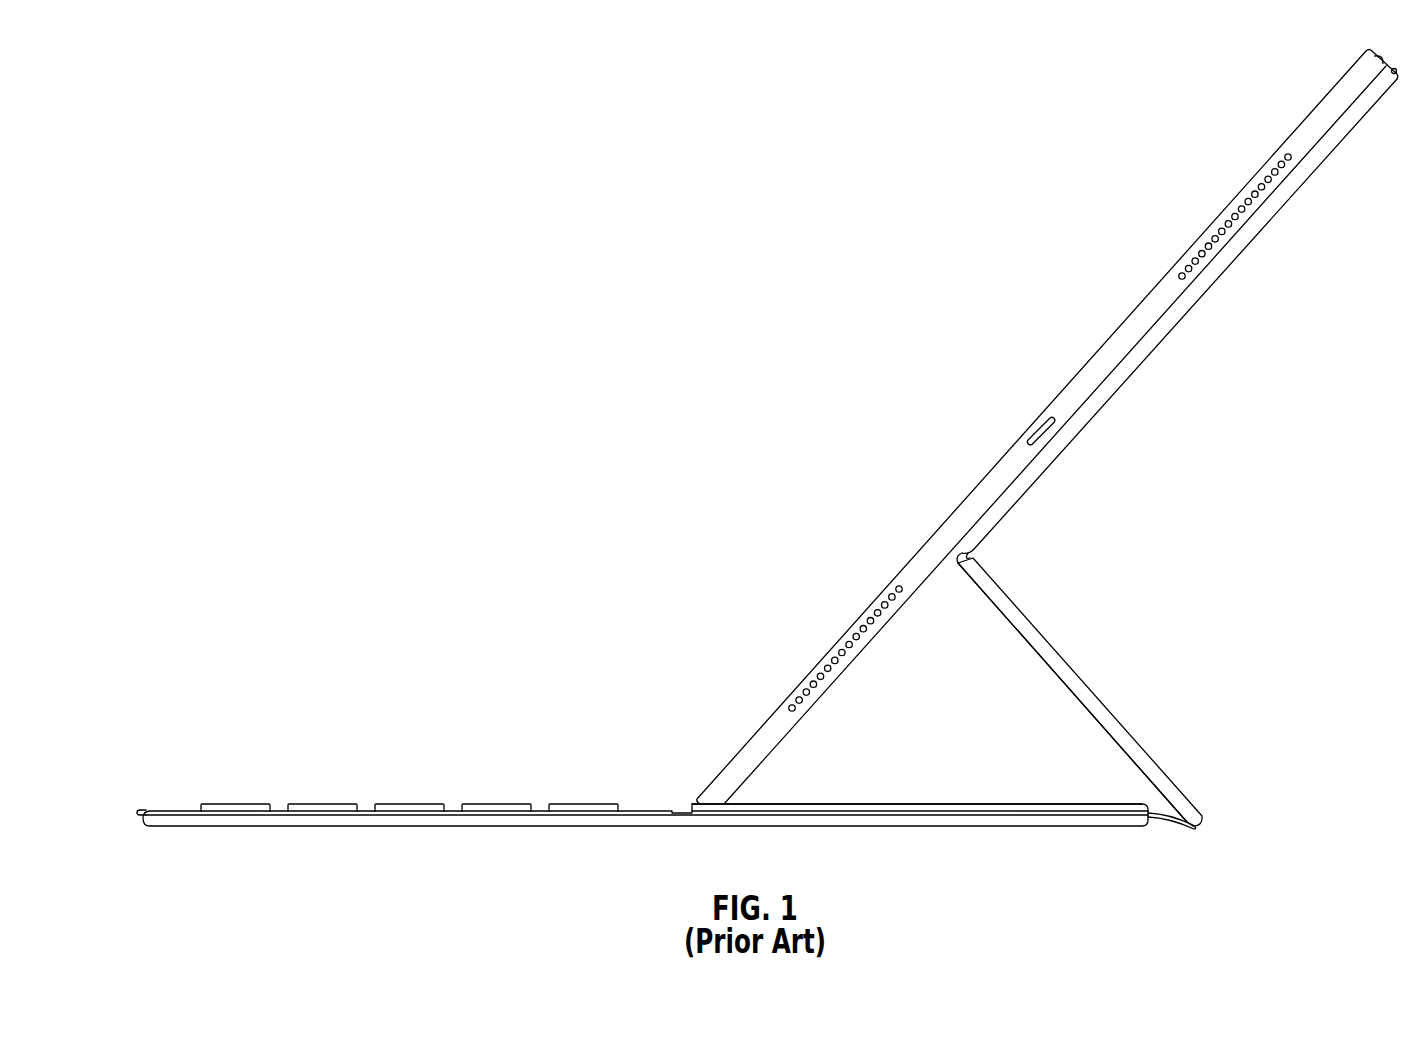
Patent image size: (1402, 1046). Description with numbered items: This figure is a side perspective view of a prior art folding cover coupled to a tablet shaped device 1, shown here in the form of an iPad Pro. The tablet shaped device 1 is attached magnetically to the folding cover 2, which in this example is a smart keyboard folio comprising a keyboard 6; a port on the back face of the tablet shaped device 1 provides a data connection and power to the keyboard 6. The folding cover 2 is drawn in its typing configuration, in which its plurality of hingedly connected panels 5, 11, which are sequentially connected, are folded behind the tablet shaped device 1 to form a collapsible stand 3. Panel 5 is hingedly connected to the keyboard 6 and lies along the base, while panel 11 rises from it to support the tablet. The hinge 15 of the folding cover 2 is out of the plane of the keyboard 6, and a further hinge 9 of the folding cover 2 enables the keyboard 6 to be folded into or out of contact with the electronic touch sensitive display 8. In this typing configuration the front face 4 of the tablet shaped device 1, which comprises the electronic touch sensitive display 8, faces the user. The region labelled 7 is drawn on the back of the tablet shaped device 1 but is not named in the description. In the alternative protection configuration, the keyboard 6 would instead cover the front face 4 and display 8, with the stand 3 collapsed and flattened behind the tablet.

The tablet shaped device 1 is at (1047, 421).
The folding cover 2 is at (693, 820).
The collapsible stand 3 is at (1177, 737).
The front face 4 is at (1214, 168).
The panel 5 is at (930, 829).
The keyboard 6 is at (420, 803).
The back panel 7 is at (1203, 337).
The electronic touch sensitive display 8 is at (1049, 398).
The hinge 9 is at (1197, 828).
The panel 11 is at (1078, 677).
The hinge 15 is at (967, 554).